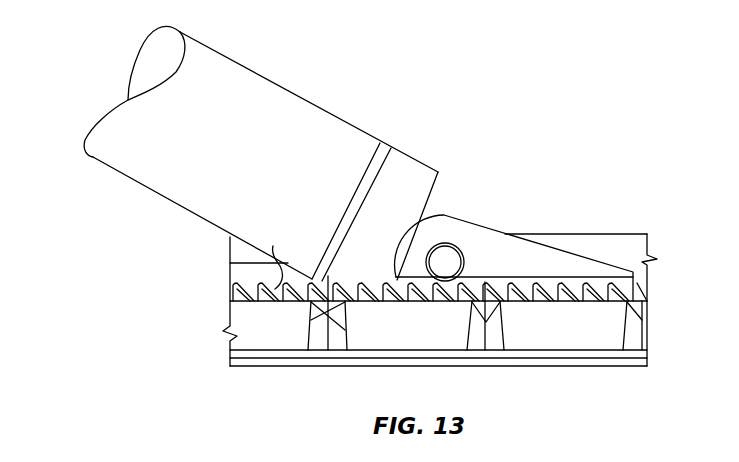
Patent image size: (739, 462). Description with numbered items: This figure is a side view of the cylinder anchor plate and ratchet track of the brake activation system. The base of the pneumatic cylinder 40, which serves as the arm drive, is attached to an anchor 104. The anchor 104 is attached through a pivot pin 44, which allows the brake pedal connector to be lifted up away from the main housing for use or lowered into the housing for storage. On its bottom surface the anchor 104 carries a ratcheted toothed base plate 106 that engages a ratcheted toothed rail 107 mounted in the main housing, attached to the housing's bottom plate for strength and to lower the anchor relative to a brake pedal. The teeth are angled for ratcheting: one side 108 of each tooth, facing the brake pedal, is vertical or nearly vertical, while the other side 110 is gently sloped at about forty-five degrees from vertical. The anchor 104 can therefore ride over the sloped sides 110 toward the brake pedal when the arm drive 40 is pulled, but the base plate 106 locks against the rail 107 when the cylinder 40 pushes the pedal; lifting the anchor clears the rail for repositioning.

The pneumatic cylinder 40 is at (300, 97).
The pivot pin 44 is at (452, 258).
The anchor 104 is at (570, 252).
The ratcheted toothed base plate 106 is at (543, 301).
The ratcheted toothed rail 107 is at (305, 363).
The tooth side facing the brake pedal 108 is at (230, 264).
The sloped tooth side 110 is at (273, 246).